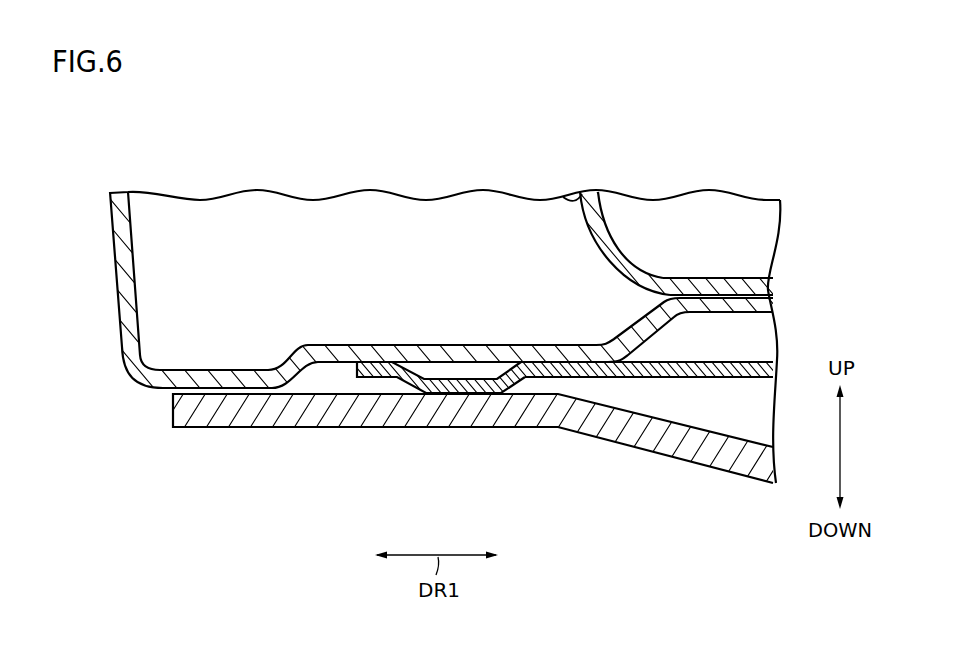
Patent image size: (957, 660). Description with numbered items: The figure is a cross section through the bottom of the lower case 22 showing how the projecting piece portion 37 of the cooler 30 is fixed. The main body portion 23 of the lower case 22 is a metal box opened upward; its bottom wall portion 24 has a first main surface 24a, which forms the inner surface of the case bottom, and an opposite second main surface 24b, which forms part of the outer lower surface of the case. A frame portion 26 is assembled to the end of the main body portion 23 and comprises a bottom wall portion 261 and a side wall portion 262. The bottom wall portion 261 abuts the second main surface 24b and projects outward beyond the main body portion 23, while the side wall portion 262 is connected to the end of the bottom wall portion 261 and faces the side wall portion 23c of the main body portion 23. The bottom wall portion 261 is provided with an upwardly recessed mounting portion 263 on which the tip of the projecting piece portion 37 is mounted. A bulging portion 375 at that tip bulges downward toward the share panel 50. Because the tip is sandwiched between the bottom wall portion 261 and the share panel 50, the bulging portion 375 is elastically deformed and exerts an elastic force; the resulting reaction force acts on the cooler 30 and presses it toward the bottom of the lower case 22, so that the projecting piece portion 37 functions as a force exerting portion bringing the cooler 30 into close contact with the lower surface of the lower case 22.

The lower case 22 is at (478, 312).
The frame portion 26 is at (478, 312).
The side wall portion 262 is at (119, 314).
The bottom wall portion 261 is at (226, 388).
The mounting portion 263 is at (328, 362).
The bulging portion 375 is at (457, 392).
The projecting piece portion 37 is at (567, 415).
The share panel 50 is at (615, 430).
The cooler 30 is at (432, 429).
The main body portion 23 is at (602, 216).
The side wall portion 23c is at (570, 194).
The bottom wall portion 24 is at (673, 232).
The first main surface 24a is at (773, 270).
The second main surface 24b is at (770, 313).